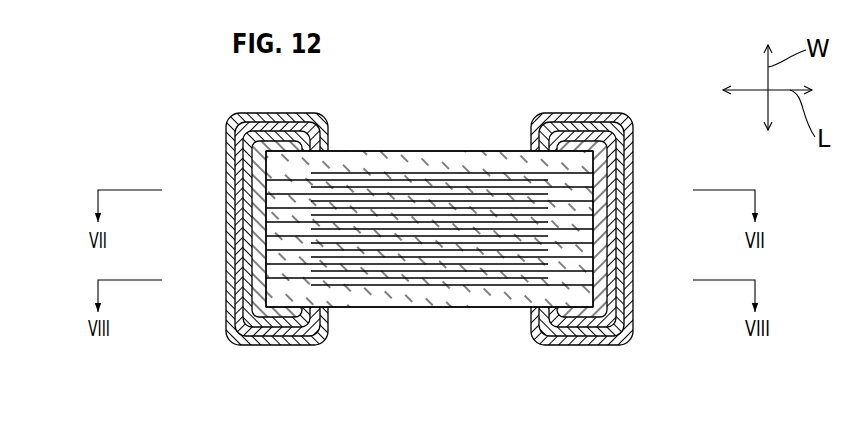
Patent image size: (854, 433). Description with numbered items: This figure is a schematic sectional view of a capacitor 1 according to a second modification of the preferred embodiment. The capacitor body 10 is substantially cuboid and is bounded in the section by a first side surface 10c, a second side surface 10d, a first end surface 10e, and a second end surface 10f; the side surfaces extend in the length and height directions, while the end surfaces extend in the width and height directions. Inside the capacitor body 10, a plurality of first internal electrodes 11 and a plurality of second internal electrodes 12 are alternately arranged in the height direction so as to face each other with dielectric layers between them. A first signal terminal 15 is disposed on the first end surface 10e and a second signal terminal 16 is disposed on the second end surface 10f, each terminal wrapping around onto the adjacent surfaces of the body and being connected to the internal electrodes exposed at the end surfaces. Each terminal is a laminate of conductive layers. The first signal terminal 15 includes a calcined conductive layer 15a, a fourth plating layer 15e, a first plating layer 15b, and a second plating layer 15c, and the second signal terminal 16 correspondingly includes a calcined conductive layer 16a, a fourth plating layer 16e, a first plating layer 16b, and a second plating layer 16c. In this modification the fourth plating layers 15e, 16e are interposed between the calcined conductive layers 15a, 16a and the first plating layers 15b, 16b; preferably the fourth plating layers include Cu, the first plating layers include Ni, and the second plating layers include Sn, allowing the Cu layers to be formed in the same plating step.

The multilayer ceramic capacitor 1 is at (621, 104).
The capacitor body 10 is at (427, 233).
The first side surface 10c is at (348, 151).
The second side surface 10d is at (385, 308).
The first end surface 10e is at (267, 287).
The second end surface 10f is at (592, 280).
The first internal electrode 11 is at (345, 282).
The second internal electrode 12 is at (480, 285).
The first signal terminal 15 is at (227, 258).
The calcined conductive layer 15a is at (256, 177).
The first plating layer 15b is at (233, 232).
The second plating layer 15c is at (228, 322).
The fourth plating layer 15e is at (248, 213).
The second signal terminal 16 is at (633, 256).
The calcined conductive layer 16a is at (612, 150).
The first plating layer 16b is at (637, 215).
The second plating layer 16c is at (632, 322).
The fourth plating layer 16e is at (628, 185).